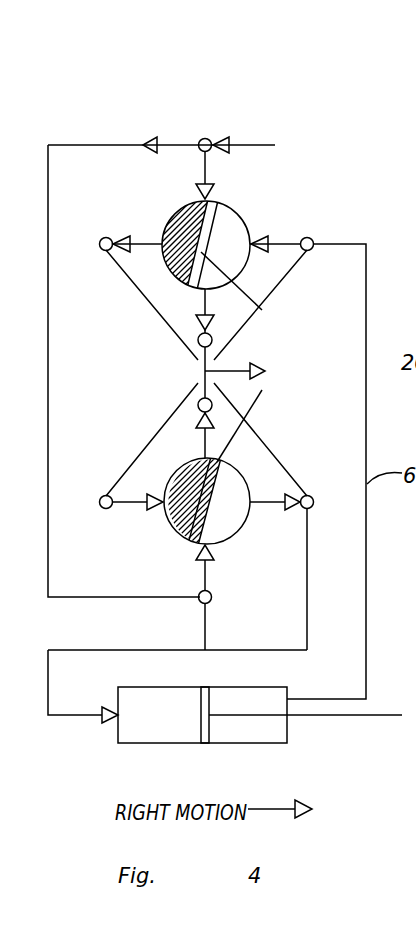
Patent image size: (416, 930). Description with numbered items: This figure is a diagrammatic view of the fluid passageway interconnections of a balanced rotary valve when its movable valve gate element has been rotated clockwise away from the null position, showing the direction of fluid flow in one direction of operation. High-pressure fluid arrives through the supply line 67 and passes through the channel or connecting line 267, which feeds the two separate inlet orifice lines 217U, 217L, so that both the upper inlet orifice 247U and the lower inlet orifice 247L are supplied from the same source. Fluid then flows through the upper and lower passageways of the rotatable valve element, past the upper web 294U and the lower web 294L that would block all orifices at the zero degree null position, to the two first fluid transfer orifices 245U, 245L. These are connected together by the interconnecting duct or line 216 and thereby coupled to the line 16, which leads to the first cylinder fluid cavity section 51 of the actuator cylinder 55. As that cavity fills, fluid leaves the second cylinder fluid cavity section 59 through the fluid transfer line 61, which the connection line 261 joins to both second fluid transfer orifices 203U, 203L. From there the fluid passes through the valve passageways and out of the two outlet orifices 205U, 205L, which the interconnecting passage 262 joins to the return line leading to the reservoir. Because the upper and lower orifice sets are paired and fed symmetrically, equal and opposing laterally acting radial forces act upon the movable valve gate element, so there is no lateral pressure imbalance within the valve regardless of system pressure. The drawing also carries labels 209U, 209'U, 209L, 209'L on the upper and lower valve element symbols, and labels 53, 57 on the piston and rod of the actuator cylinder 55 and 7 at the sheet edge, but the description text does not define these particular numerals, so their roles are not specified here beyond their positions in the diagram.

The connecting line 267 is at (84, 145).
The high-pressure fluid supply line 67 is at (255, 144).
The inlet orifice line 217U is at (204, 138).
The inlet orifice 247U is at (207, 167).
The first fluid transfer orifice 245U is at (170, 222).
The upper motor swash plate 209U is at (250, 217).
The upper left port 209'U is at (106, 271).
The second fluid transfer orifice 203U is at (283, 243).
The connection line 261 is at (284, 276).
The upper web 294U is at (258, 303).
The outlet orifice 205U is at (205, 296).
The interconnecting passage 262 is at (203, 370).
The outlet orifice 205L is at (205, 443).
The first fluid transfer orifice 245L is at (263, 508).
The lower motor swash plate 209L is at (248, 470).
The lower web 294L is at (250, 405).
The interconnecting line 216 is at (262, 432).
The second fluid transfer orifice 203L is at (137, 503).
The lower right port 209'L is at (216, 522).
The line 16 is at (308, 575).
The inlet orifice 247L is at (208, 578).
The inlet orifice line 217L is at (204, 605).
The actuator cylinder 55 is at (248, 687).
The cylinder fluid cavity section 51 is at (150, 733).
The piston 53 is at (204, 743).
The cylinder fluid cavity section 59 is at (258, 733).
The piston rod 57 is at (362, 717).
The fluid transfer line 61 is at (15, 478).
The frame 7 is at (3, 748).